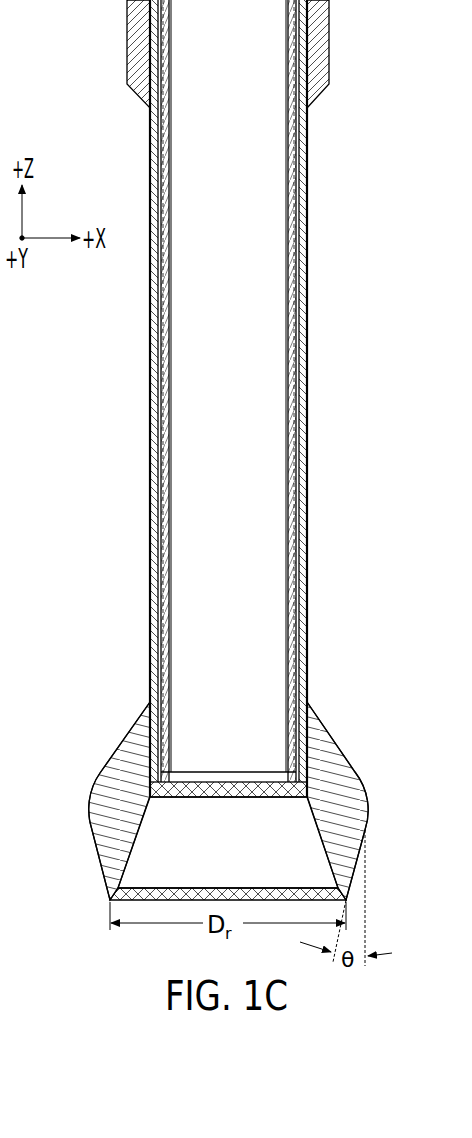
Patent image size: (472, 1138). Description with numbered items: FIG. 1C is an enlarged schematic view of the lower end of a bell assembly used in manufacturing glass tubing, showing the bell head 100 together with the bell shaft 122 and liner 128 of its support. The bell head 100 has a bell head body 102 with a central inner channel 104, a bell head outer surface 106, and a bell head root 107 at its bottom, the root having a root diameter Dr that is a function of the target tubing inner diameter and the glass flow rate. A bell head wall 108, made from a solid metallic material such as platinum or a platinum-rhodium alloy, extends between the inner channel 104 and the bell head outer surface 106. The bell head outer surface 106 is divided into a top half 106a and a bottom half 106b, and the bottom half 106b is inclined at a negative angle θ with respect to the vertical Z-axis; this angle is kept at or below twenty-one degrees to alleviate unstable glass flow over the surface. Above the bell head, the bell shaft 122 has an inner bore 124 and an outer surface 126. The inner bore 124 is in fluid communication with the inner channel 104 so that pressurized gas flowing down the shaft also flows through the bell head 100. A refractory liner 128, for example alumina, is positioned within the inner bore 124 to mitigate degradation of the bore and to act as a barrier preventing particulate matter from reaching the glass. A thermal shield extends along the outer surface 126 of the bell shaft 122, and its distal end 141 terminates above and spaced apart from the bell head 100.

The bell head 100 is at (226, 801).
The bell head body 102 is at (119, 770).
The inner channel 104 is at (248, 856).
The bell head outer surface 106 is at (365, 850).
The top half of bell head outer surface 106a is at (146, 712).
The bottom half of bell head outer surface 106b is at (92, 840).
The bell head root 107 is at (110, 900).
The bell head wall 108 is at (345, 805).
The bell shaft 122 is at (307, 518).
The inner bore 124 is at (246, 284).
The outer surface of bell shaft 126 is at (150, 503).
The liner 128 is at (170, 177).
The distal end of thermal shield 141 is at (317, 98).